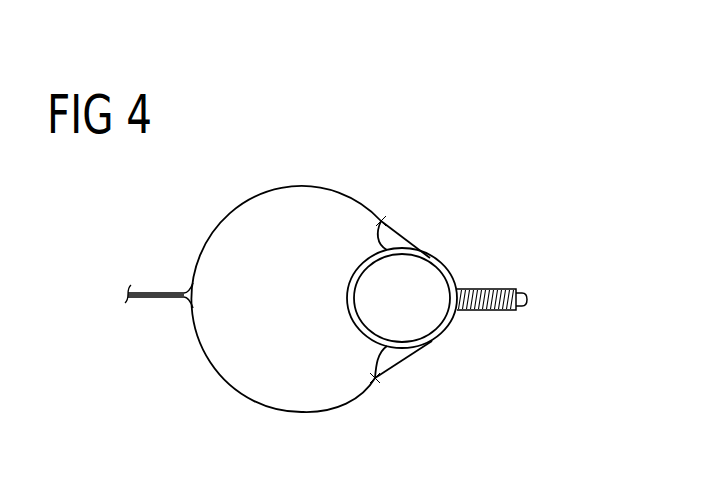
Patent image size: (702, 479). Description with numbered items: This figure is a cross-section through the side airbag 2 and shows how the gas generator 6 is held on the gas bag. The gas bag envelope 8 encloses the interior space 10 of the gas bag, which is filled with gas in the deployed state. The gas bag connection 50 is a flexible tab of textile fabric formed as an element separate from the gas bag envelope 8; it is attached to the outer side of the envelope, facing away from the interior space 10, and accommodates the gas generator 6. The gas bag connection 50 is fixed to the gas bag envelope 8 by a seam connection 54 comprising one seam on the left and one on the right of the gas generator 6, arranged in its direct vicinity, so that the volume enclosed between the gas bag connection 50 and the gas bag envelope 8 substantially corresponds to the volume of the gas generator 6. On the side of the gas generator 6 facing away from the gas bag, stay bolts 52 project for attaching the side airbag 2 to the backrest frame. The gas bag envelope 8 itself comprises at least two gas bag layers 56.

The side airbag 2 is at (518, 212).
The gas generator 6 is at (413, 280).
The gas bag envelope 8 is at (302, 186).
The interior space 10 is at (261, 294).
The gas bag connection 50 is at (403, 234).
The stay bolts 52 is at (507, 288).
The seam connection 54 is at (382, 221).
The gas bag layers 56 is at (150, 293).